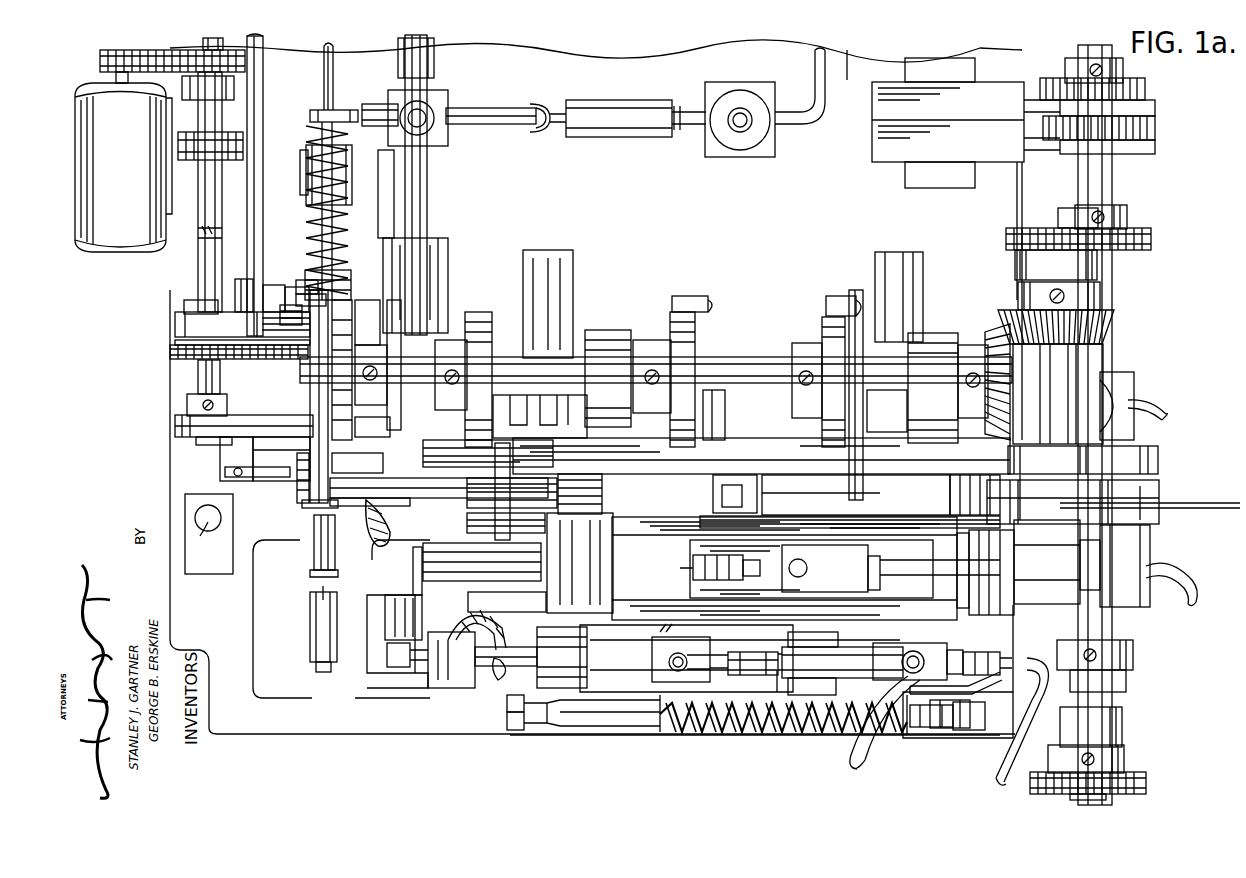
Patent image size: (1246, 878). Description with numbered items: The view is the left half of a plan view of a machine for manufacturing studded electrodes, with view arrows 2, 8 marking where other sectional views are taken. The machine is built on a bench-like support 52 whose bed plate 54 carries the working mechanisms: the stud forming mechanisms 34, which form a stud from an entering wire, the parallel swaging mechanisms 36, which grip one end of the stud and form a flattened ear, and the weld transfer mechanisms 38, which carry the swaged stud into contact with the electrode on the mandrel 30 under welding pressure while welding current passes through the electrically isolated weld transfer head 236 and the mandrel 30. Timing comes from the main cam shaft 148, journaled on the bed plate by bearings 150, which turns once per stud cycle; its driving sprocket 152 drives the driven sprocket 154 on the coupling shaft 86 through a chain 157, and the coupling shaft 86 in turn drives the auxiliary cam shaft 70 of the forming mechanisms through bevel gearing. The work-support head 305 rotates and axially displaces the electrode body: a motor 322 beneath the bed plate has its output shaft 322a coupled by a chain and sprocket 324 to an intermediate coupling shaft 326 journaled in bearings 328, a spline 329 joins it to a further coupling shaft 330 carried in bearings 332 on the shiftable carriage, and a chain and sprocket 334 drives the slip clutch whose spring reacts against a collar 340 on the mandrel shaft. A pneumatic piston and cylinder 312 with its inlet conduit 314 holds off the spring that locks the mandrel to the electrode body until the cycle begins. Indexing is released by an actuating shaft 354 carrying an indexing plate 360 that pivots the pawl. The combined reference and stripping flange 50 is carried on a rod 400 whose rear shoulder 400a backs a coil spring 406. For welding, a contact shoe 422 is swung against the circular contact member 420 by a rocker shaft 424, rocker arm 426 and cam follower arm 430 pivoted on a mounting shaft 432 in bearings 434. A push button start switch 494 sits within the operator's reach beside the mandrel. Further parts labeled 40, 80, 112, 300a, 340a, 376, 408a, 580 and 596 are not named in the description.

The section line 2 is at (112, 414).
The section line 8 is at (1234, 322).
The mandrel 30 is at (314, 552).
The stud forming mechanisms 34 is at (1186, 498).
The swaging mechanisms 36 is at (1164, 562).
The weld transfer mechanisms 38 is at (432, 708).
The post 40 is at (448, 214).
The combined reference and stripping flange 50 is at (752, 438).
The bench-like support 52 is at (614, 52).
The bed plate 54 is at (672, 56).
The auxiliary cam shaft 70 is at (750, 358).
The bevel gear 80 is at (1110, 322).
The coupling shaft 86 is at (1072, 420).
The gear 112 is at (670, 326).
The main cam shaft 148 is at (1112, 634).
The bearings 150 is at (988, 728).
The driving sprocket 152 is at (1138, 226).
The driven sprocket 154 is at (1040, 226).
The chain 157 is at (1148, 244).
The weld transfer head 236 is at (466, 688).
The plunger 300a is at (318, 582).
The work-support head 305 is at (140, 466).
The pneumatically-controlled piston and cylinder 312 is at (306, 172).
The inlet conduit 314 is at (512, 128).
The motor 322 is at (123, 167).
The output shaft 322a is at (118, 78).
The chain and sprocket 324 is at (152, 58).
The intermediate coupling shaft 326 is at (214, 38).
The bearings 328 is at (186, 134).
The spline 329 is at (198, 232).
The further coupling shaft 330 is at (184, 306).
The bearings 332 is at (178, 322).
The chain and sprocket 334 is at (172, 350).
The collar 340 is at (296, 440).
The bracket 340a is at (290, 286).
The actuating shaft 354 is at (264, 84).
The indexing plate 360 is at (235, 296).
The bracket 376 is at (218, 458).
The supporting shaft or rod 400 is at (312, 216).
The shoulder 400a is at (344, 112).
The coil spring 406 is at (312, 118).
The pin 408a is at (328, 44).
The circular contact member 420 is at (300, 280).
The contact shoe 422 is at (420, 486).
The rocker shaft 424 is at (392, 440).
The rocker arm 426 is at (360, 294).
The cam follower arm 430 is at (310, 396).
The mounting shaft 432 is at (412, 516).
The bearings 434 is at (600, 476).
The push button start switch 494 is at (209, 534).
The gear 580 is at (1146, 782).
The collar 596 is at (1140, 770).